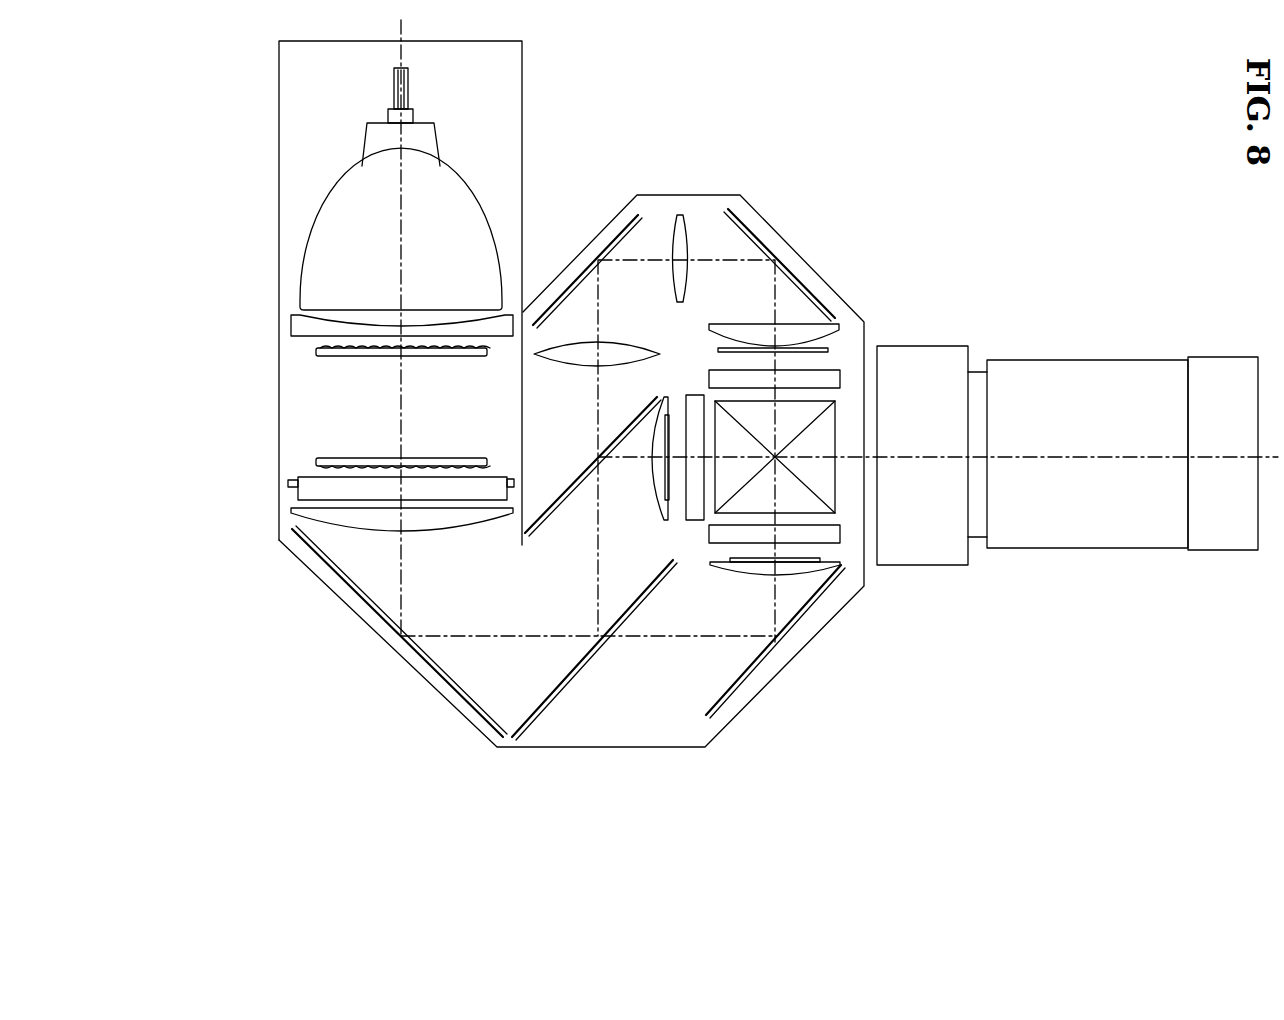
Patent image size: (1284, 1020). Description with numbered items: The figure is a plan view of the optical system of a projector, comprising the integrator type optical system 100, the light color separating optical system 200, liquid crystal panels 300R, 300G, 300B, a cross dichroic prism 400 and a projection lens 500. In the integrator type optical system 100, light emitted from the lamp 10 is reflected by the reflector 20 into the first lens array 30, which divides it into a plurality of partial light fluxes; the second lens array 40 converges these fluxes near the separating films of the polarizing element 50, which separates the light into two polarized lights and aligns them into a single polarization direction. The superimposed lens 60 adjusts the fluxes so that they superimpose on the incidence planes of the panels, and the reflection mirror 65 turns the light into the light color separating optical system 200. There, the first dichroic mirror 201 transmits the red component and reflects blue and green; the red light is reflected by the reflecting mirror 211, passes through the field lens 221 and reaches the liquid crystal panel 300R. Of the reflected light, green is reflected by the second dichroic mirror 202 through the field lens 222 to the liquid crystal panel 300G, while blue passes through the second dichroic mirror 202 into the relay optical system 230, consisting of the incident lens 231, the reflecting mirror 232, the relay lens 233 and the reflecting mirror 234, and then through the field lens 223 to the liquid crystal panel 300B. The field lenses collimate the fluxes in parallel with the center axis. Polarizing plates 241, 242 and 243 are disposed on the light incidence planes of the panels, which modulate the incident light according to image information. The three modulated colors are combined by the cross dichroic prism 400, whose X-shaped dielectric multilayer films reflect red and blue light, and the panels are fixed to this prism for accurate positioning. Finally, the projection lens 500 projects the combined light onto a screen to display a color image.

The lamp 10 is at (386, 119).
The reflector 20 is at (306, 248).
The first lens array 30 is at (318, 352).
The second lens array 40 is at (320, 461).
The polarizing element 50 is at (290, 483).
The superimposed lens 60 is at (294, 510).
The reflection mirror 65 is at (335, 577).
The integrator type optical system 100 is at (250, 404).
The light color separating optical system 200 is at (602, 762).
The first dichroic mirror 201 is at (594, 649).
The second dichroic mirror 202 is at (560, 500).
The reflecting mirror 211 is at (740, 679).
The field lens 221 is at (718, 573).
The field lens 222 is at (655, 470).
The field lens 223 is at (755, 322).
The relay optical system 230 is at (676, 208).
The incident lens 231 is at (554, 368).
The reflecting mirror 232 is at (612, 238).
The relay lens 233 is at (689, 250).
The reflecting mirror 234 is at (765, 250).
The polarizing plate 241 is at (835, 563).
The polarizing plate 242 is at (672, 478).
The polarizing plate 243 is at (826, 350).
The liquid crystal panel for red light 300R is at (712, 535).
The liquid crystal panel for green light 300G is at (688, 398).
The liquid crystal panel for blue light 300B is at (712, 375).
The cross dichroic prism 400 is at (835, 515).
The projection lens 500 is at (1077, 350).